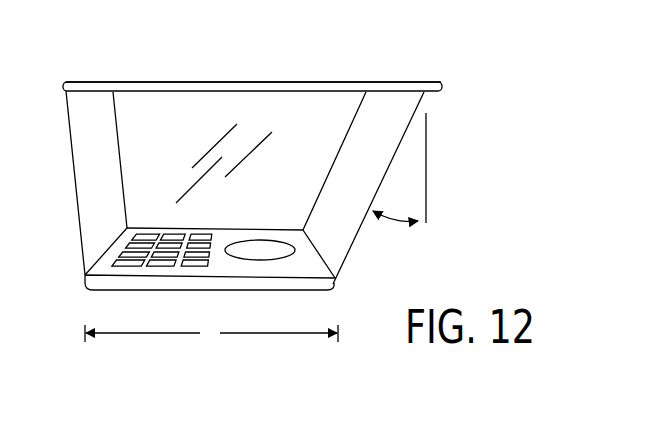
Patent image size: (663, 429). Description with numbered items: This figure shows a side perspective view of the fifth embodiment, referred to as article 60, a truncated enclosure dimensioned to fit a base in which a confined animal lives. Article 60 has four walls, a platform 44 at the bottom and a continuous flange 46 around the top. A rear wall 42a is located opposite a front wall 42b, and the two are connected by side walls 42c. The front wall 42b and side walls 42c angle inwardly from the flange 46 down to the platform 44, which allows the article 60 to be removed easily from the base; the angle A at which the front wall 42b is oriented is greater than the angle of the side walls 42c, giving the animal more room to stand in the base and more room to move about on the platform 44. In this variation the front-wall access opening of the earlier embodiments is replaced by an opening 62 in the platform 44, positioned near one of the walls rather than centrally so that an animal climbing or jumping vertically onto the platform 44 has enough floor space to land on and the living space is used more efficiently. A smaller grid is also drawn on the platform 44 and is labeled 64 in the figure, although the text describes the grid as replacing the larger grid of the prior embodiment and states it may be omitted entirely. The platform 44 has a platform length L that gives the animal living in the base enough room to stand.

The article 60 is at (238, 58).
The rear wall 42a is at (92, 196).
The front wall 42b is at (347, 242).
The side walls 42c is at (280, 97).
The continuous flange 46 is at (355, 82).
The platform 44 is at (322, 270).
The opening 62 is at (256, 242).
The keypad 64 is at (195, 265).
The angle A is at (397, 219).
The platform length L is at (211, 335).